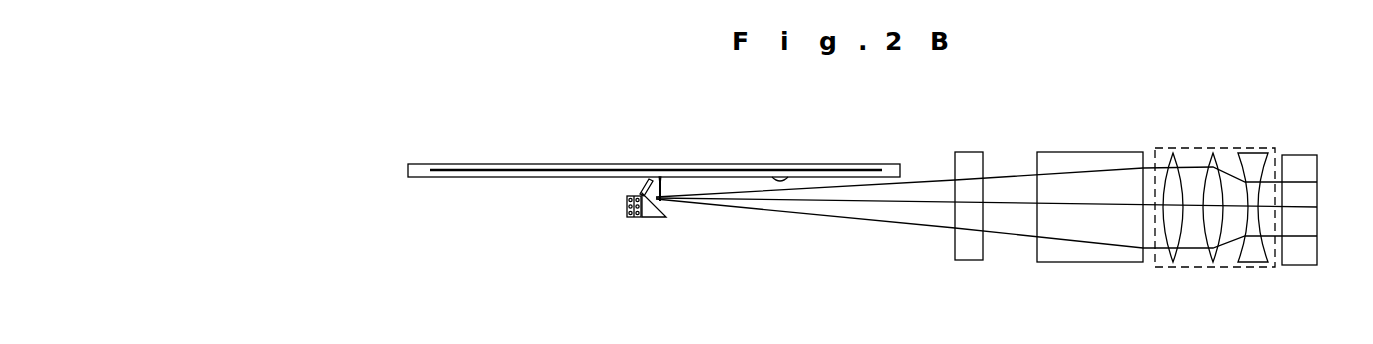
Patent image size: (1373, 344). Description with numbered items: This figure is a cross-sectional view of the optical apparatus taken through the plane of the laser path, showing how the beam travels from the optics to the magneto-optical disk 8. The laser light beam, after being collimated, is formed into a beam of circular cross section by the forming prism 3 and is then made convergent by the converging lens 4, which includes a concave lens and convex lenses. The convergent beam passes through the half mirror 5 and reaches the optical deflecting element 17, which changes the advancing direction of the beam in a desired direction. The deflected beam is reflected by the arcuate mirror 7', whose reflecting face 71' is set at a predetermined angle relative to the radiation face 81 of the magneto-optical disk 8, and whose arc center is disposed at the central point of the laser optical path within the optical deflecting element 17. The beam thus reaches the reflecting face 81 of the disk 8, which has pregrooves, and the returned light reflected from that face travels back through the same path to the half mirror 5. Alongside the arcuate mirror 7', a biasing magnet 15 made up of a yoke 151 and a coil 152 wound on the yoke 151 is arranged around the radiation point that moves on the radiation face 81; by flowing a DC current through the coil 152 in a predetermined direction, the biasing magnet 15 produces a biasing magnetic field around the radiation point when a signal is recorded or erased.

The forming prism 3 is at (1313, 162).
The converging lens 4 is at (1188, 155).
The half mirror 5 is at (1080, 160).
The optical deflecting element 17 is at (978, 158).
The magneto-optical disk 8 is at (732, 163).
The radiation face 81 is at (803, 163).
The biasing magnet 15 is at (637, 224).
The yoke 151 is at (637, 188).
The coil 152 is at (628, 211).
The arcuate mirror 7' is at (986, 220).
The reflecting face 71' is at (986, 221).